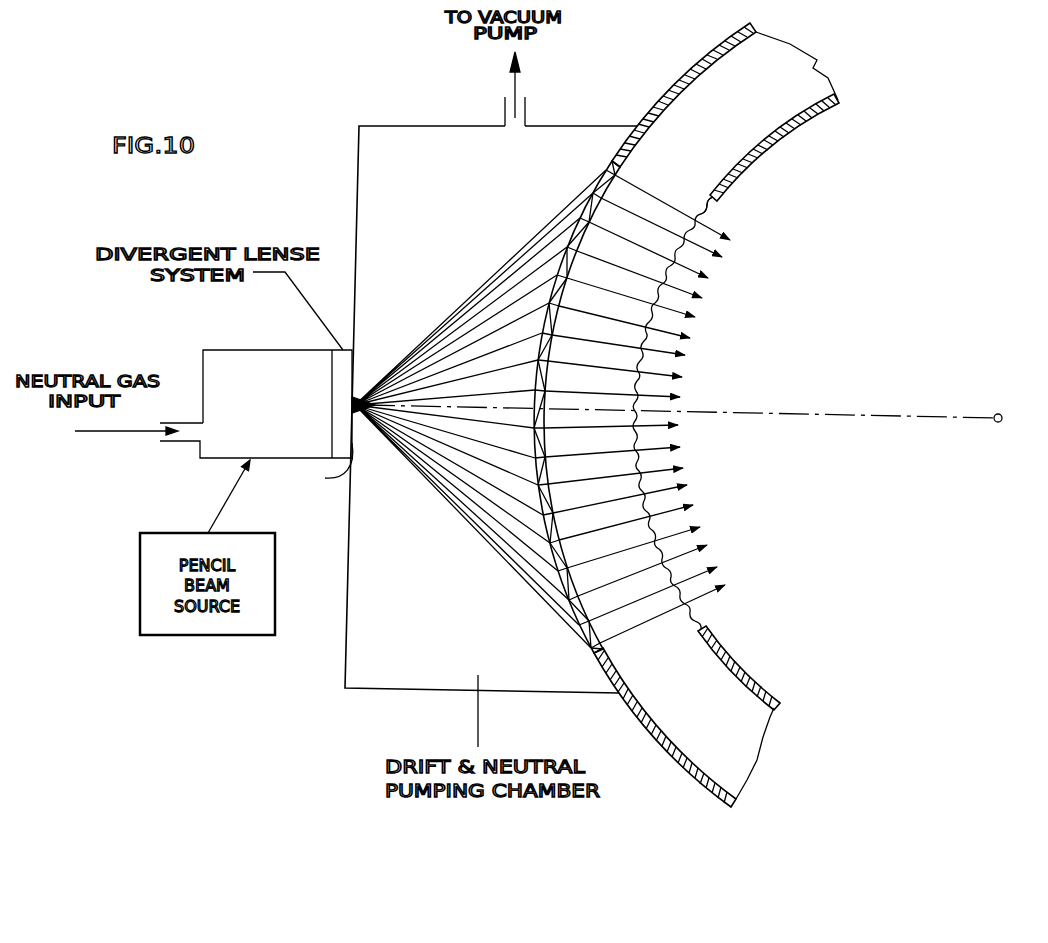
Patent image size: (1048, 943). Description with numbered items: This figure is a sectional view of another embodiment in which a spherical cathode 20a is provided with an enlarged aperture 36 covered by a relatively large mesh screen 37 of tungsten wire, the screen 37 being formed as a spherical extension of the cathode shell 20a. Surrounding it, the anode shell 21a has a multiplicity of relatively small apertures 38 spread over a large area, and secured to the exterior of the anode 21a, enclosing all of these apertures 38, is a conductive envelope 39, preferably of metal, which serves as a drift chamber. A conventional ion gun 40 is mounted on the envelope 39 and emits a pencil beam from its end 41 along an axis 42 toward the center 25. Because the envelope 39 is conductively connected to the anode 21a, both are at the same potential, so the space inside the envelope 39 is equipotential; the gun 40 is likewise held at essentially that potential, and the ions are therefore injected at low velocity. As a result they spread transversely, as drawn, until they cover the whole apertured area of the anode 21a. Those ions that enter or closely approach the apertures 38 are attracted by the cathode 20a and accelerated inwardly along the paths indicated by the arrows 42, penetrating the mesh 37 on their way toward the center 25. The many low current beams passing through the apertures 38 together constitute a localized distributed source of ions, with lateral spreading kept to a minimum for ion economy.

The anode shell 21a is at (695, 62).
The spherical cathode 20a is at (770, 138).
The conductive envelope 39 is at (422, 127).
The apertures 38 is at (610, 163).
The axis 42 is at (650, 187).
The enlarged aperture 36 is at (714, 200).
The mesh screen 37 is at (664, 303).
The center 25 is at (1000, 414).
The ion gun 40 is at (234, 350).
The end 41 is at (330, 472).